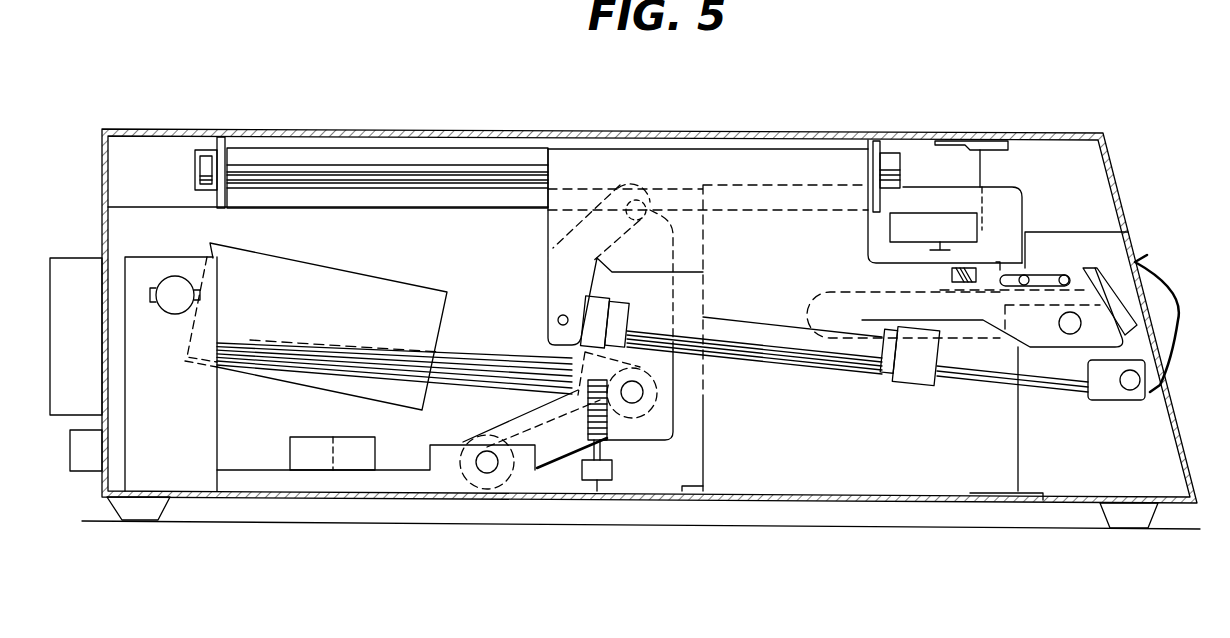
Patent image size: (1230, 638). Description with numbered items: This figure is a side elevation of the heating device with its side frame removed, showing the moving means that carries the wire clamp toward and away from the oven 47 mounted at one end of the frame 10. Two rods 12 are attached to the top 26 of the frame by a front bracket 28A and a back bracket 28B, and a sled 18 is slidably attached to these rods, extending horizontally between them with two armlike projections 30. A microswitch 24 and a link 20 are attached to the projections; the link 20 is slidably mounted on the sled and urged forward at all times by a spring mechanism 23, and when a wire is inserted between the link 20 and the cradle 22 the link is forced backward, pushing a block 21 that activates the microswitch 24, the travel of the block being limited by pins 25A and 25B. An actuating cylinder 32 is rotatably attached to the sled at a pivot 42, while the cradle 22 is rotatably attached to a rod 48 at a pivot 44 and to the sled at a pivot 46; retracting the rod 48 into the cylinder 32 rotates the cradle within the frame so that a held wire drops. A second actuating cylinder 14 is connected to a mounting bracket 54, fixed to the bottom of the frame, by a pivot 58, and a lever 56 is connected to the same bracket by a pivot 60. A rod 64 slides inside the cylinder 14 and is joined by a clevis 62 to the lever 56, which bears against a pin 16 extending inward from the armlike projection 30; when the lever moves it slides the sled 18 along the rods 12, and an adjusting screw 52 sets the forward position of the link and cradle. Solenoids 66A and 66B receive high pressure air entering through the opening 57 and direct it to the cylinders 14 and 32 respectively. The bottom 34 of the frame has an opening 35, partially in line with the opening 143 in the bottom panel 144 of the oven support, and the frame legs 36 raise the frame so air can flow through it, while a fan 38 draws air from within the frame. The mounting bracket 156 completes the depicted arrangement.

The frame 10 is at (1028, 132).
The rods 12 is at (312, 155).
The actuating cylinder 14 is at (352, 282).
The pin 16 is at (640, 200).
The sled 18 is at (742, 168).
The link 20 is at (1117, 252).
The block 21 is at (1012, 277).
The cradle 22 is at (1162, 330).
The spring mechanism 23 is at (950, 275).
The microswitch 24 is at (972, 228).
The pin 25A is at (1067, 277).
The pin 25B is at (1025, 277).
The top of the frame 26 is at (473, 132).
The front bracket 28A is at (873, 150).
The back bracket 28B is at (235, 130).
The armlike projection 30 is at (767, 251).
The actuating cylinder 32 is at (776, 352).
The bottom of the frame 34 is at (818, 503).
The opening 35 is at (737, 498).
The frame legs 36 is at (163, 508).
The fan 38 is at (62, 258).
The pivot 42 is at (558, 316).
The pivot 44 is at (1135, 382).
The pivot 46 is at (1065, 327).
The oven 47 is at (1020, 457).
The rod 48 is at (982, 368).
The adjusting screw 52 is at (603, 478).
The mounting bracket 54 is at (205, 436).
The lever 56 is at (648, 433).
The opening for compressed air 57 is at (80, 463).
The pivot 58 is at (165, 277).
The pivot 60 is at (487, 473).
The clevis 62 is at (557, 350).
The rod 64 is at (467, 366).
The solenoid 66A is at (312, 463).
The solenoid 66B is at (362, 465).
The opening 143 is at (770, 493).
The bottom panel 144 is at (692, 493).
The mounting bracket 156 is at (830, 133).